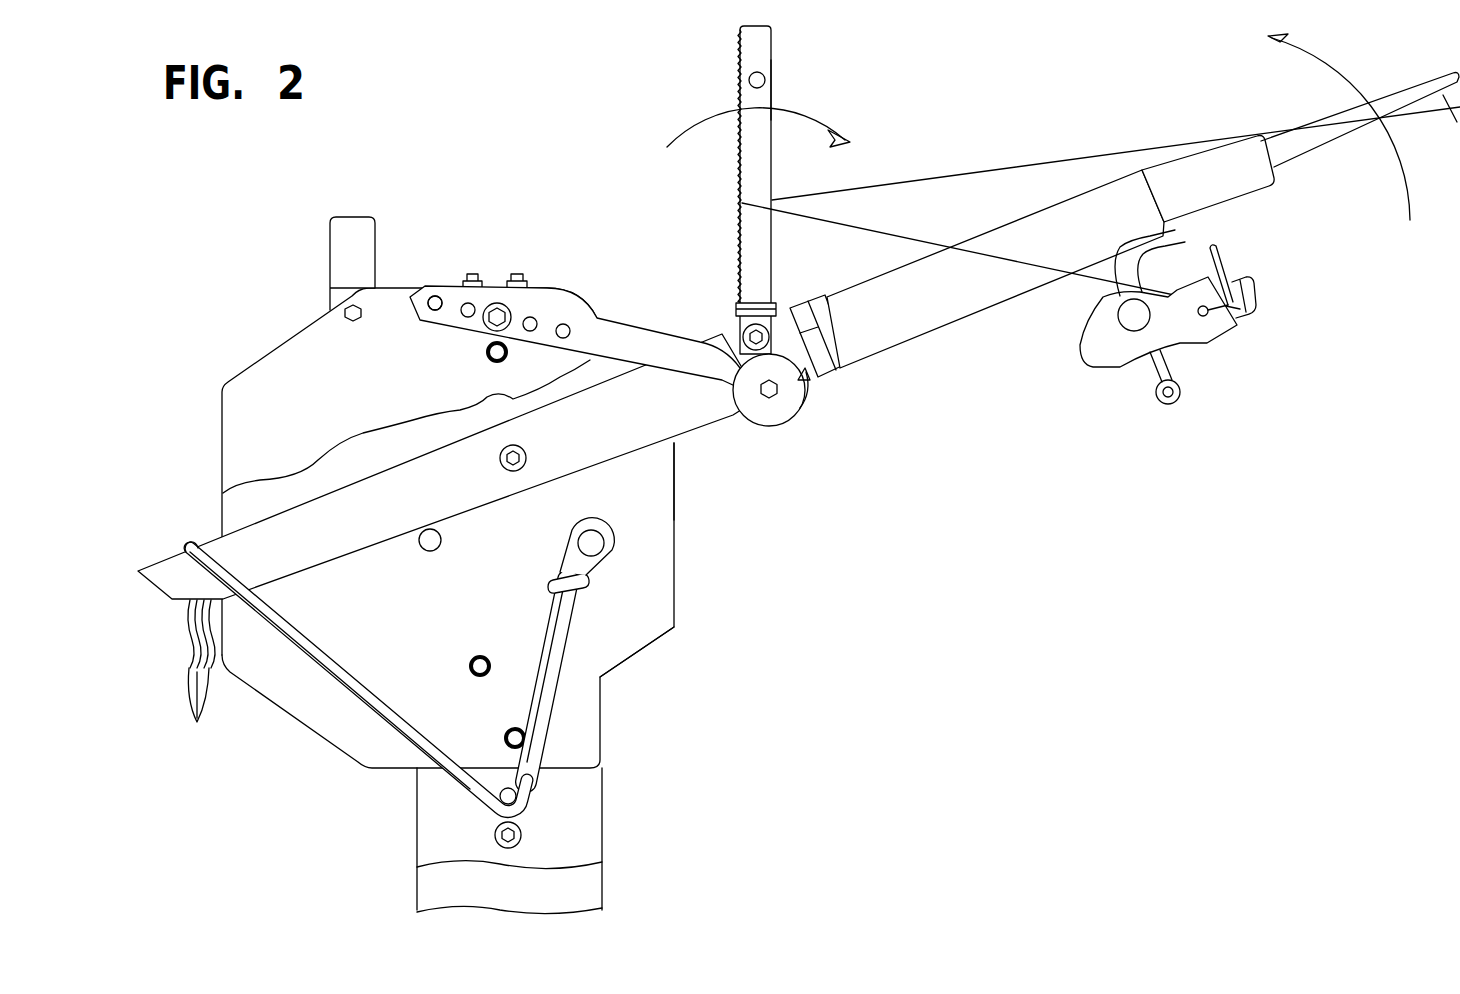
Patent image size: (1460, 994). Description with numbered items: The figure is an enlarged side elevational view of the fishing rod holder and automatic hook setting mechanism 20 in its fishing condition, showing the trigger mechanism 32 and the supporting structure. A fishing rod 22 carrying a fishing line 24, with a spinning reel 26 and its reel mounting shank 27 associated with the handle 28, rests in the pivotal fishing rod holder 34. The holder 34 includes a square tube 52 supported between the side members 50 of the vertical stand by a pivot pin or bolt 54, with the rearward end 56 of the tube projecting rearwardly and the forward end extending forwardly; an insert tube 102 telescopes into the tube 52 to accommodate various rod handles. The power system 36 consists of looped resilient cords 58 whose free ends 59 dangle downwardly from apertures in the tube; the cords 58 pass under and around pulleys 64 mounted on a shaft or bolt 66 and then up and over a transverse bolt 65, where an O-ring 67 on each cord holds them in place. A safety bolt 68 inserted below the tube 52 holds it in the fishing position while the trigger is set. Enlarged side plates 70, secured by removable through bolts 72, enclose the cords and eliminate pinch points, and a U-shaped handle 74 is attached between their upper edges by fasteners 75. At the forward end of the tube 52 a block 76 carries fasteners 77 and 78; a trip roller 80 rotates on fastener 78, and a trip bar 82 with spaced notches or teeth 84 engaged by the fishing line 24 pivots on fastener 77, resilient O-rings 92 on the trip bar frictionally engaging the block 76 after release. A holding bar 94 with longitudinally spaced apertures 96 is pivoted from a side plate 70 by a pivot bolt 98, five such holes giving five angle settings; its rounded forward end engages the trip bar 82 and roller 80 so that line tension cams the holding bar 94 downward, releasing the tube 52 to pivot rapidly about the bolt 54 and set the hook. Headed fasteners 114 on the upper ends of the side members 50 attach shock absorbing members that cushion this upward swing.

The fishing rod holder and automatic hook setting mechanism 20 is at (258, 354).
The fishing rod 22 is at (1412, 93).
The fishing line 24 is at (922, 176).
The spinning reel 26 is at (1216, 335).
The reel mounting shank 27 is at (1137, 250).
The handle 28 is at (1256, 178).
The trigger mechanism 32 is at (668, 323).
The pivotal fishing rod holder 34 is at (422, 458).
The power system 36 is at (286, 634).
The side members 50 is at (580, 838).
The square tube 52 is at (686, 420).
The pivot pin or bolt 54 is at (511, 468).
The rearward end of the square tube 56 is at (168, 588).
The looped resilient cords 58 is at (330, 680).
The free ends of the cords 59 is at (197, 727).
The pulleys 64 is at (516, 797).
The transverse bolt 65 is at (595, 543).
The shaft or bolt 66 is at (496, 836).
The O-ring 67 is at (595, 578).
The safety bolt 68 is at (430, 551).
The side plates 70 is at (630, 648).
The through bolts 72 is at (486, 355).
The U-shaped handle 74 is at (355, 228).
The fasteners 75 is at (350, 308).
The block 76 is at (800, 343).
The fastener 77 is at (758, 330).
The fastener 78 is at (769, 402).
The trip roller 80 is at (790, 396).
The trip bar 82 is at (770, 92).
The notches or teeth 84 is at (748, 78).
The resilient O-rings 92 is at (744, 302).
The holding bar 94 is at (606, 402).
The longitudinally spaced apertures 96 is at (466, 305).
The pivot bolt 98 is at (498, 312).
The insert tube 102 is at (1062, 210).
The headed fasteners 114 is at (472, 274).